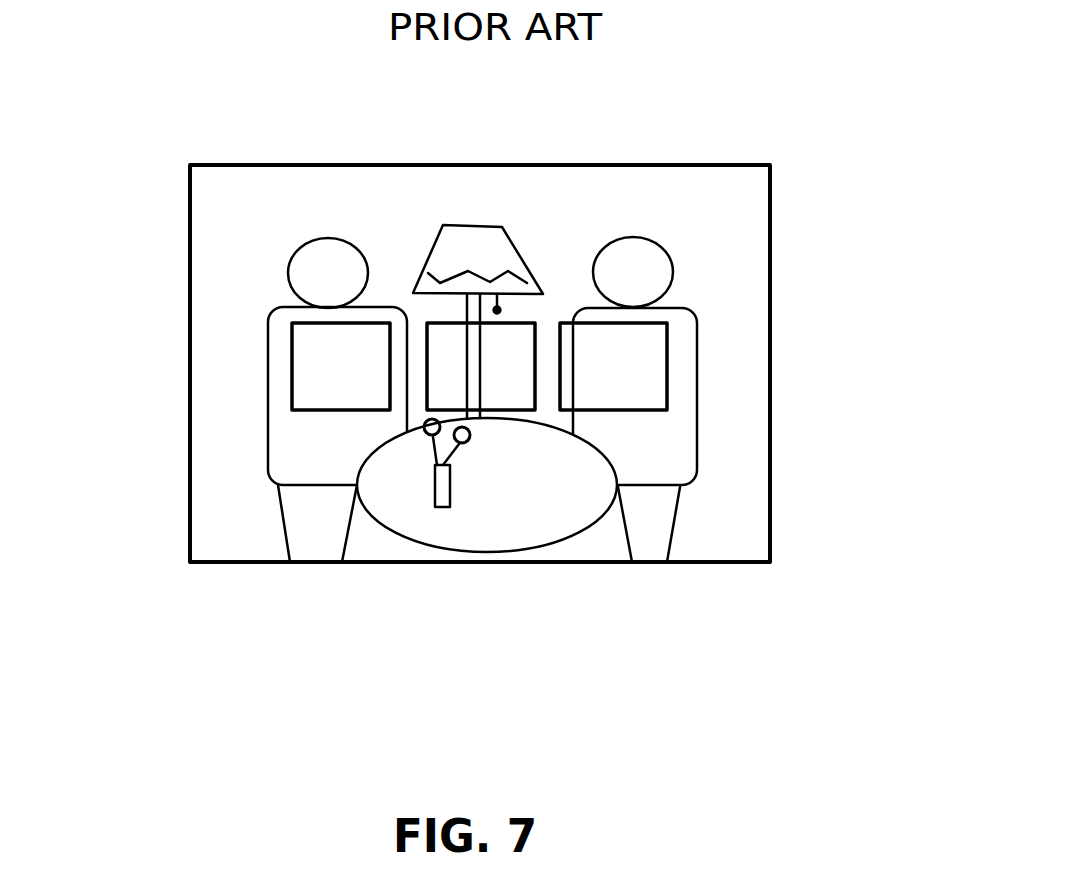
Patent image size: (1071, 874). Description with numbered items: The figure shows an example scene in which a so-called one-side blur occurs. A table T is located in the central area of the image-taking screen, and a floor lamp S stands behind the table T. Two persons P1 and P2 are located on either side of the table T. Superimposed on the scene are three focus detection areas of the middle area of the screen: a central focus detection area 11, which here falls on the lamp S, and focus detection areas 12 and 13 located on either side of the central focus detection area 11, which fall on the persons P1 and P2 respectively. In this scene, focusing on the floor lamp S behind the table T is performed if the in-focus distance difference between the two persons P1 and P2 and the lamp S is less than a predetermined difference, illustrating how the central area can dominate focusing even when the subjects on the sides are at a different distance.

The floor lamp S is at (477, 238).
The person P1 is at (323, 280).
The person P2 is at (642, 263).
The focus detection area 11 is at (425, 362).
The focus detection area 12 is at (290, 383).
The focus detection area 13 is at (667, 372).
The table T is at (513, 510).